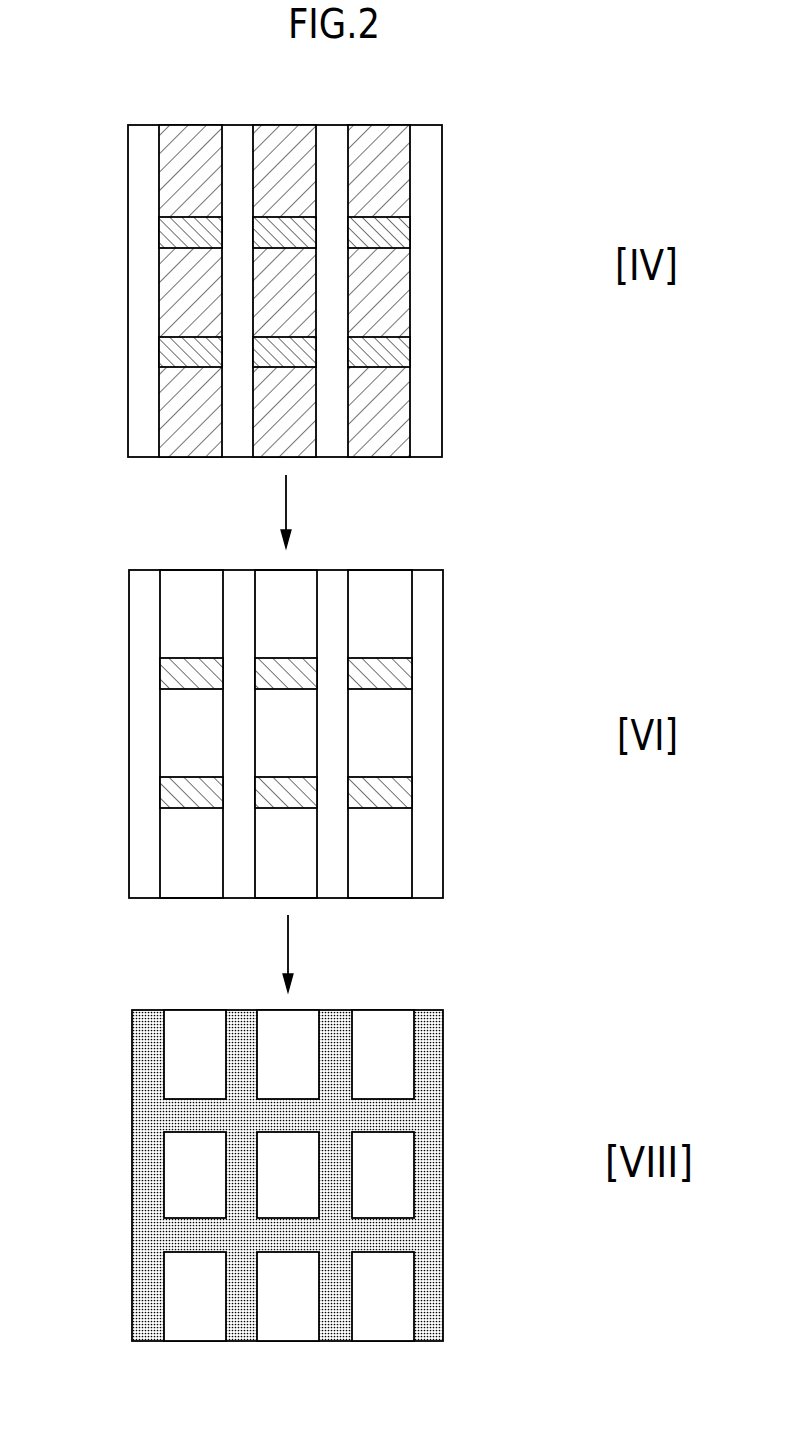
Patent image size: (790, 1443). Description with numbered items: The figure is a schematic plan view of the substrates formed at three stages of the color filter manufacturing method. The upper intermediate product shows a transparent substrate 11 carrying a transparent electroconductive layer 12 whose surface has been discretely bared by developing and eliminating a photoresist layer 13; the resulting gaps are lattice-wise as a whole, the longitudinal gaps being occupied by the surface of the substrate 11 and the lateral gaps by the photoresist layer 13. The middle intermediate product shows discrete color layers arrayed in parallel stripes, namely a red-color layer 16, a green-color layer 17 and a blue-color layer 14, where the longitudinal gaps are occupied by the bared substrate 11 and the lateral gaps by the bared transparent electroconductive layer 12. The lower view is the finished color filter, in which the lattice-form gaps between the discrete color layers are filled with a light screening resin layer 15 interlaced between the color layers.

The transparent substrate 11 is at (442, 168).
The transparent electroconductive layer 12 is at (385, 305).
The photoresist layer 13 is at (393, 232).
The blue-color layer 14 is at (395, 614).
The light screening resin layer 15 is at (430, 1060).
The red-color layer 16 is at (185, 592).
The green-color layer 17 is at (278, 595).